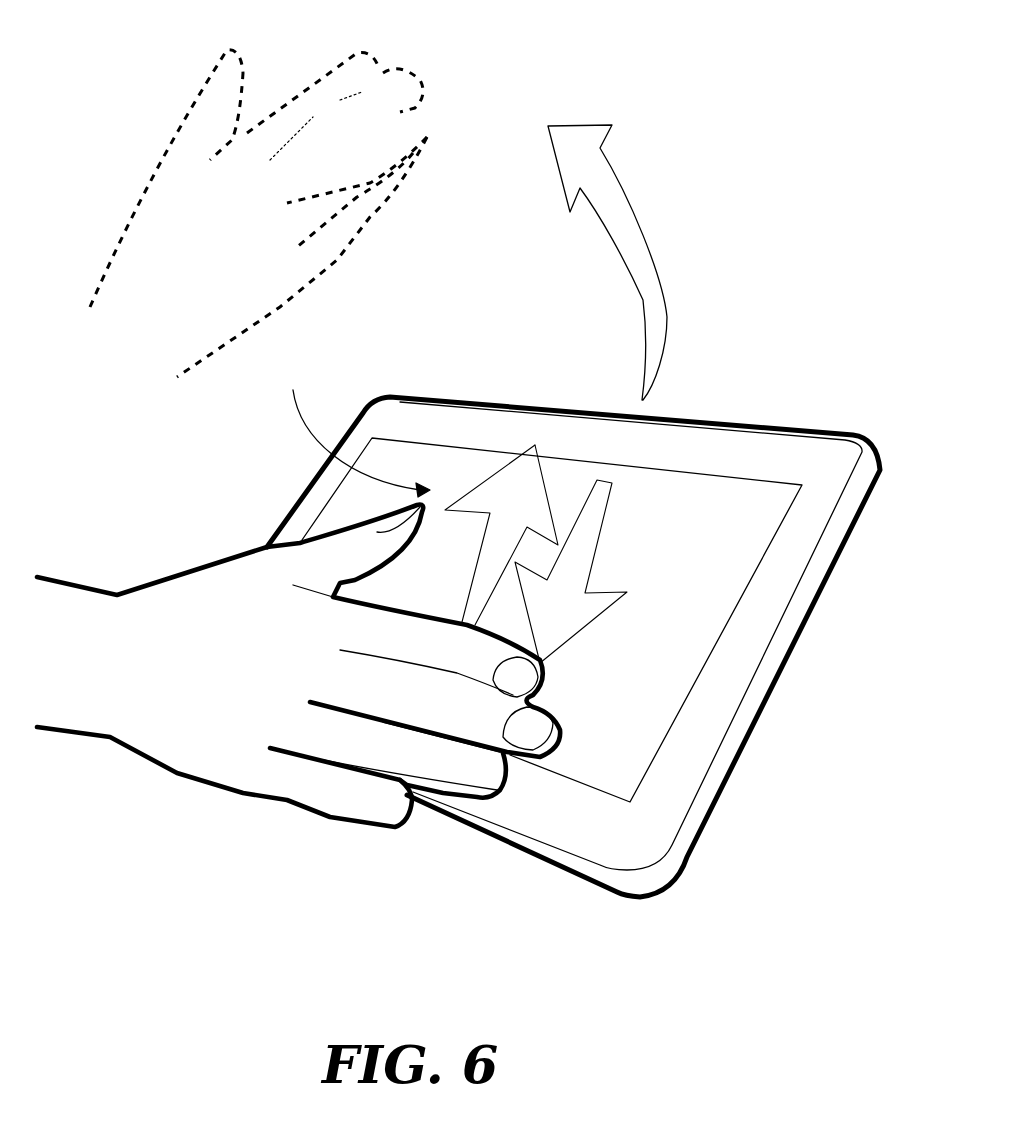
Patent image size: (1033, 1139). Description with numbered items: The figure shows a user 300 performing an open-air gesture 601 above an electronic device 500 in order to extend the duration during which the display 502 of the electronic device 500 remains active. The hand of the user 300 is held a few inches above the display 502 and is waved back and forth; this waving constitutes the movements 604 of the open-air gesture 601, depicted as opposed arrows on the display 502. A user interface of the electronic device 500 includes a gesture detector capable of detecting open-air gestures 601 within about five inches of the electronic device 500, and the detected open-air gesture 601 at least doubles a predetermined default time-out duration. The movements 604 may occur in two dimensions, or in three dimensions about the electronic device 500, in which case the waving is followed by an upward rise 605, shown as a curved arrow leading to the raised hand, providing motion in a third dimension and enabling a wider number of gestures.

The user 300 is at (238, 627).
The electronic device 500 is at (573, 647).
The display 502 is at (717, 643).
The open-air gesture 601 is at (351, 429).
The movements 604 is at (605, 520).
The upward rise 605 is at (665, 277).